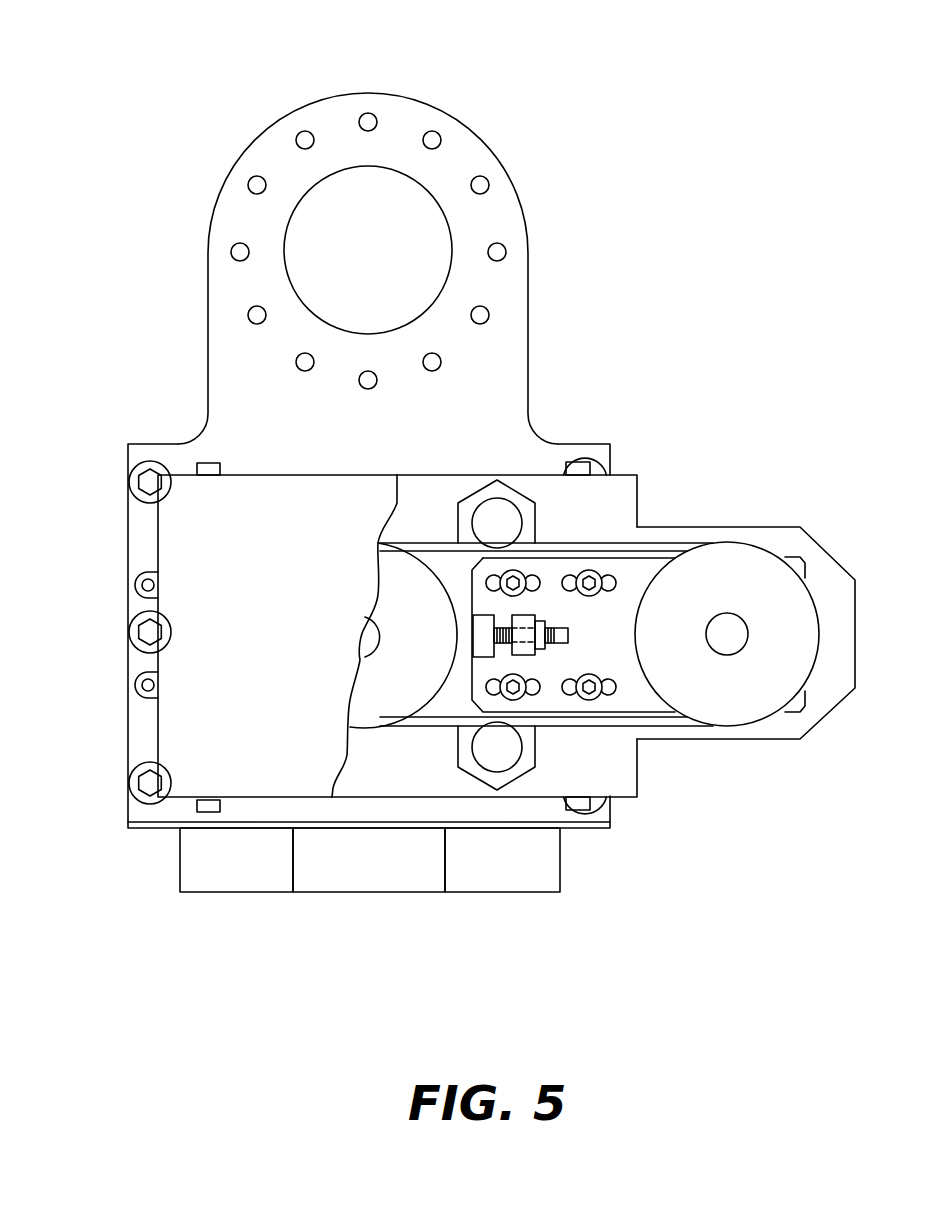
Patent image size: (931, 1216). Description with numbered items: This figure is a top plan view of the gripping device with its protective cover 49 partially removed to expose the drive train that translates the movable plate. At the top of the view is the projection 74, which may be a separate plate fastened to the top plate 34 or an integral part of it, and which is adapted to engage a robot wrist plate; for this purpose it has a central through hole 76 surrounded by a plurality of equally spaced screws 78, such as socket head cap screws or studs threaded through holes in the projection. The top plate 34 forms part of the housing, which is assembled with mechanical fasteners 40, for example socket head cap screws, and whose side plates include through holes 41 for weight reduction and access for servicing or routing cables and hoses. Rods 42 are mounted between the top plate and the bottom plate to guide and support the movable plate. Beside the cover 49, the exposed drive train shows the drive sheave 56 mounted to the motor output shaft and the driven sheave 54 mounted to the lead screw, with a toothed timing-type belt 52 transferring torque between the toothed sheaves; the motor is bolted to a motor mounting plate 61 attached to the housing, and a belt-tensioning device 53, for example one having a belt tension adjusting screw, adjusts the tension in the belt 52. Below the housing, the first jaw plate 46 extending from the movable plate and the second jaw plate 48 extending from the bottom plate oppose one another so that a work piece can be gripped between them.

The projection 74 is at (556, 97).
The through hole 76 is at (375, 168).
The screws 78 is at (305, 141).
The top plate 34 is at (142, 738).
The mechanical fasteners 40 is at (150, 483).
The protective cover 49 is at (182, 548).
The belt 52 is at (661, 548).
The motor mounting plate 61 is at (772, 535).
The driven sheave 54 is at (804, 650).
The drive sheave 56 is at (439, 652).
The through holes 41 is at (465, 507).
The rods 42 is at (495, 510).
The belt-tensioning device 53 is at (622, 670).
The first jaw plate 46 is at (370, 883).
The second jaw plate 48 is at (237, 883).